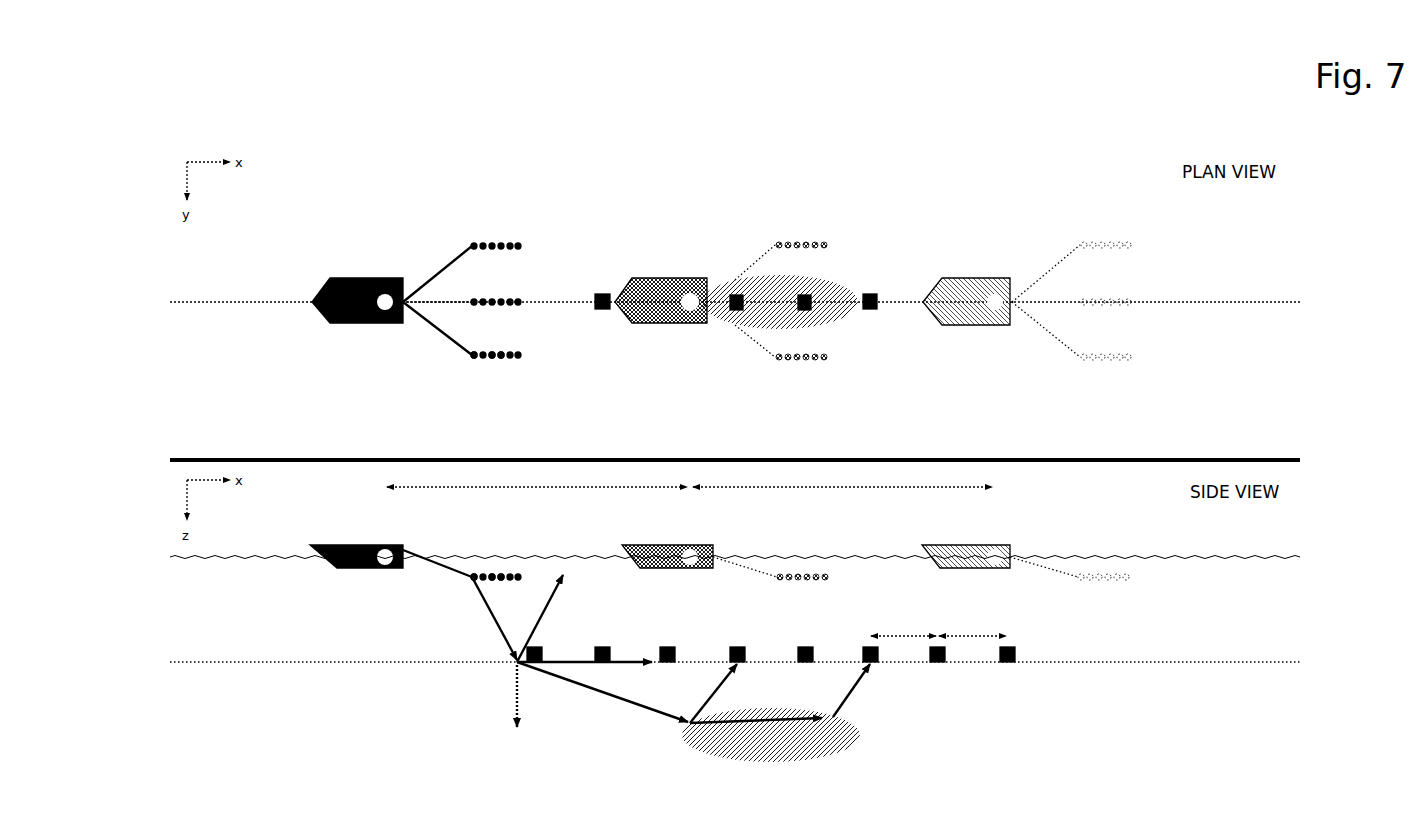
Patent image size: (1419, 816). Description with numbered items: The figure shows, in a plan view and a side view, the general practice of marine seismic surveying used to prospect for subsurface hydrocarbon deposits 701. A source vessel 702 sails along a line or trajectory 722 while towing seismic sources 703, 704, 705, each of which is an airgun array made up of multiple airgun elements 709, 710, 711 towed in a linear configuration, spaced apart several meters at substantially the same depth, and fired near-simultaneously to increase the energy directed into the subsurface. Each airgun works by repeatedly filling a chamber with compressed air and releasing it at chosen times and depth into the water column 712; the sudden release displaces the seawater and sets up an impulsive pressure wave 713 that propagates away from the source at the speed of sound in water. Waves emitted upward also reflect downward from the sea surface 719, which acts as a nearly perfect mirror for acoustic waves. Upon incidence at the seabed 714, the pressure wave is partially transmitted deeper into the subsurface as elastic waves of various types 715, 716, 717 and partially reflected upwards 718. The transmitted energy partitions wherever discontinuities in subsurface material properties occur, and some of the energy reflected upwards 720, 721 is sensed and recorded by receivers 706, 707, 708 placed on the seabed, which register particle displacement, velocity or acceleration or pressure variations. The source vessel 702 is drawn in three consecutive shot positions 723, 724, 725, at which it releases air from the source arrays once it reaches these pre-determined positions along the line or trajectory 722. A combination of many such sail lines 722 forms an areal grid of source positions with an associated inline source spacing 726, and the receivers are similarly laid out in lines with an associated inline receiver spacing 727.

The subsurface hydrocarbon deposits 701 is at (771, 518).
The vessel 702 is at (356, 423).
The seismic source 703 is at (480, 443).
The seismic source 704 is at (480, 301).
The seismic source 705 is at (480, 269).
The receiver 706 is at (542, 648).
The receiver 707 is at (601, 294).
The receiver 708 is at (672, 650).
The airgun 709 is at (472, 358).
The airgun 710 is at (490, 352).
The airgun 711 is at (499, 358).
The water column 712 is at (292, 612).
The impulsive pressure wave 713 is at (500, 634).
The seabed 714 is at (366, 661).
The elastic wave 715 is at (516, 704).
The elastic wave 716 is at (603, 694).
The elastic wave 717 is at (628, 666).
The upward reflected wave 718 is at (556, 601).
The sea surface 719 is at (266, 559).
The upward reflected energy 720 is at (727, 674).
The upward reflected energy 721 is at (856, 684).
The sail line 722 is at (252, 303).
The shot position 723 is at (385, 545).
The shot position 724 is at (690, 545).
The shot position 725 is at (995, 545).
The inline source spacing 726 is at (689, 487).
The inline receiver spacing 727 is at (943, 645).